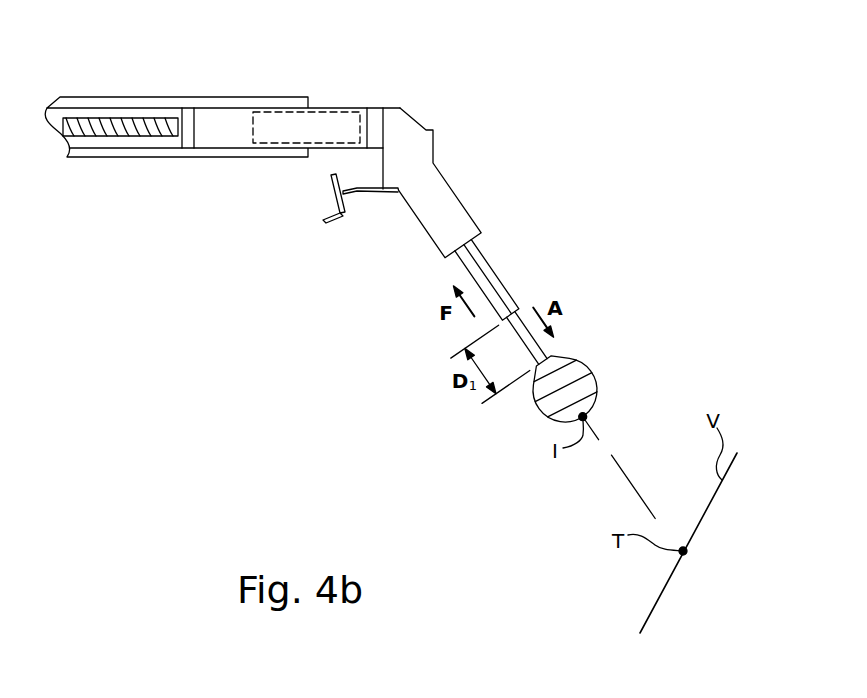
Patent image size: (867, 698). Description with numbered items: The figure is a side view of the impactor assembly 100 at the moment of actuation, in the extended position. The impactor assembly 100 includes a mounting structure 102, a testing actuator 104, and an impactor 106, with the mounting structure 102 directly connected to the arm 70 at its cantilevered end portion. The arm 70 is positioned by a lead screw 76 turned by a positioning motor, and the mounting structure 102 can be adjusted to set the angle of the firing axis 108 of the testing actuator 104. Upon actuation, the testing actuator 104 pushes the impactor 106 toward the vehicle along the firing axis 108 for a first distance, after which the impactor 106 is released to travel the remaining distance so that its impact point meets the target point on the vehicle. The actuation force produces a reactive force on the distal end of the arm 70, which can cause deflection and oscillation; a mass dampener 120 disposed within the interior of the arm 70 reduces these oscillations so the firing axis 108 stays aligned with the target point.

The impactor assembly 100 is at (512, 120).
The arm 70 is at (173, 97).
The lead screw 76 is at (107, 130).
The mass dampener 120 is at (320, 112).
The mounting structure 102 is at (432, 130).
The testing actuator 104 is at (510, 292).
The impactor 106 is at (600, 390).
The firing axis 108 is at (625, 467).